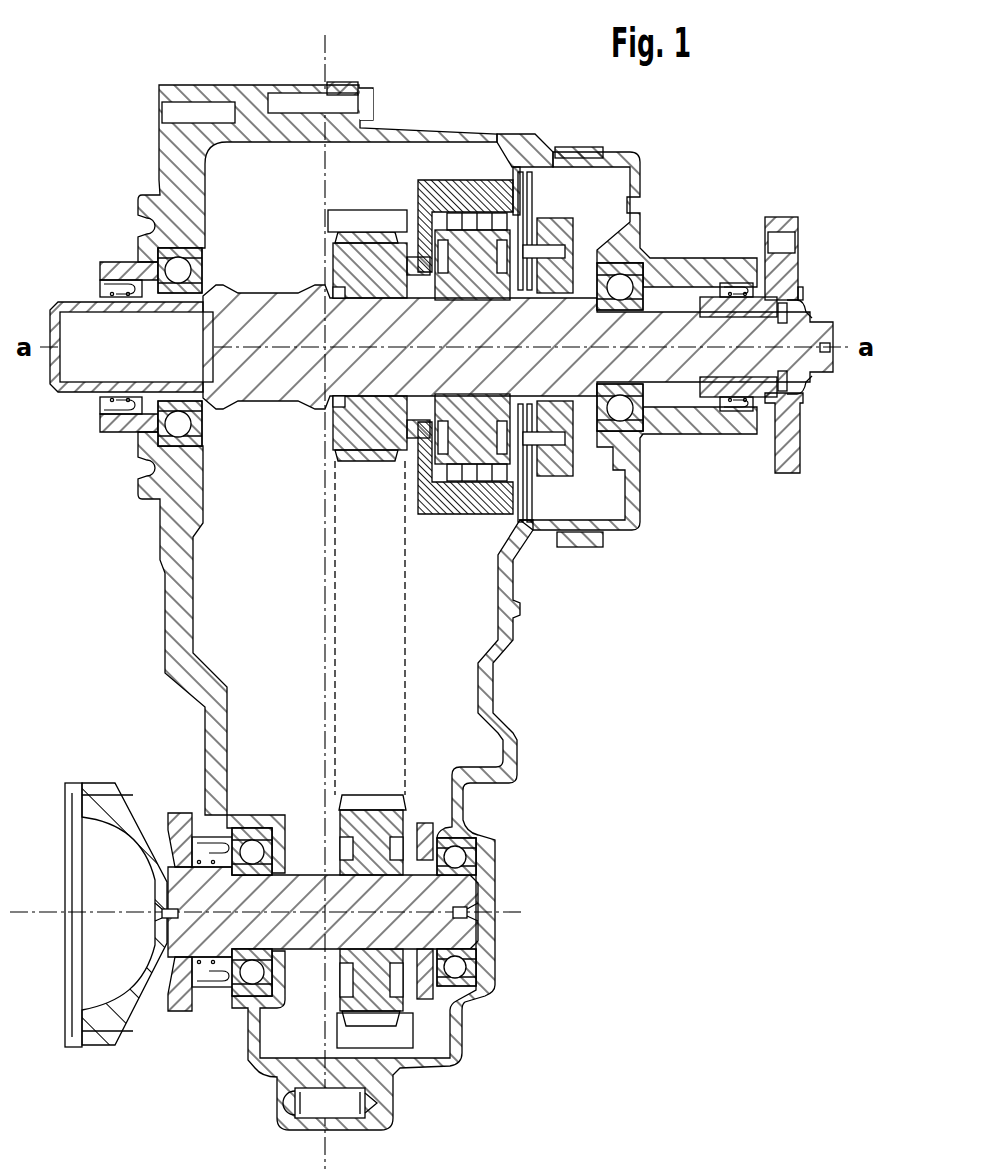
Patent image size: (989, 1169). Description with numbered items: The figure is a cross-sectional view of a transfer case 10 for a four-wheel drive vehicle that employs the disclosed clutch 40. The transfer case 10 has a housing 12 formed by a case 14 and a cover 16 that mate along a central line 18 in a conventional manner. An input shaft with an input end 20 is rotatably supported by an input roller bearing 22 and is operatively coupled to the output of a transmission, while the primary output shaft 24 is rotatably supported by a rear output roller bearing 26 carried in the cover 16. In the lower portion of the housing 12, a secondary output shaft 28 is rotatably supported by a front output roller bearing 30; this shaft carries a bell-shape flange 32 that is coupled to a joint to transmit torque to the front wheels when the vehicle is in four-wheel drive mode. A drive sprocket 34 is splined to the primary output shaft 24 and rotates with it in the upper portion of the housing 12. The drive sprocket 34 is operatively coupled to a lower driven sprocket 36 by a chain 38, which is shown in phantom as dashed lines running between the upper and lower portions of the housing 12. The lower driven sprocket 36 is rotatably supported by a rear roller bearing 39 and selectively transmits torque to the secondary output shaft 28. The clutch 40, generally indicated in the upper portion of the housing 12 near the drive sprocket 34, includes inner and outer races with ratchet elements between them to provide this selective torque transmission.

The transfer case 10 is at (190, 74).
The housing 12 is at (345, 83).
The case 14 is at (260, 98).
The cover 16 is at (398, 125).
The central line 18 is at (325, 155).
The input end 20 is at (56, 396).
The input roller bearing 22 is at (174, 426).
The primary output shaft 24 is at (836, 336).
The rear output roller bearing 26 is at (620, 286).
The secondary output shaft 28 is at (118, 1010).
The front output roller bearing 30 is at (252, 851).
The bell-shape flange 32 is at (93, 790).
The drive sprocket 34 is at (350, 430).
The lower driven sprocket 36 is at (410, 812).
The chain 38 is at (407, 550).
The rear roller bearing 39 is at (476, 860).
The clutch 40 is at (549, 487).